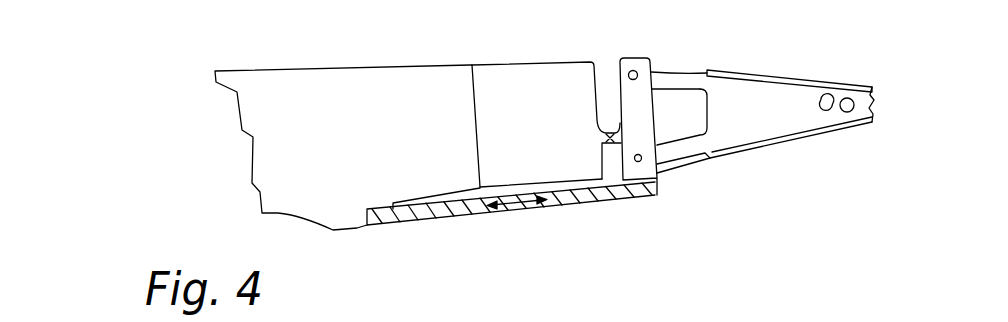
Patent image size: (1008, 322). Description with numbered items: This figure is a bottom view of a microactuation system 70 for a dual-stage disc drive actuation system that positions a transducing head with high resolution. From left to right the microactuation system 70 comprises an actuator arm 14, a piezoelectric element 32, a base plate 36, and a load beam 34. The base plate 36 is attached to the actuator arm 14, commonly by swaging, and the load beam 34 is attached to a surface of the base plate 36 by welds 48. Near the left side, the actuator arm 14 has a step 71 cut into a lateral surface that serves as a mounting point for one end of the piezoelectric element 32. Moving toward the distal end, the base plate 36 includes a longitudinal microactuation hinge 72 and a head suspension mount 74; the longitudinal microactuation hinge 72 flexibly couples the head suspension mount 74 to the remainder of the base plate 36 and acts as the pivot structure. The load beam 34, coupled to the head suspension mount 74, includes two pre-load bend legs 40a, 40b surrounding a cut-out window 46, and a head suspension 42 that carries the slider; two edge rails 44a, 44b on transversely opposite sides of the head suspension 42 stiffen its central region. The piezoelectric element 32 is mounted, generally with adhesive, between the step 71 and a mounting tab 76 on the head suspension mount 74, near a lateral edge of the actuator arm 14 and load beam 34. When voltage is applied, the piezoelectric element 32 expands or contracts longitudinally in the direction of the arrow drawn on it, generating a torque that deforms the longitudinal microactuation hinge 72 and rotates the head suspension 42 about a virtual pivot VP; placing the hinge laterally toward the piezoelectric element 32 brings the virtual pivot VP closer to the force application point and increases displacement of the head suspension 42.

The actuator arm 14 is at (277, 165).
The piezoelectric element 32 is at (460, 207).
The load beam 34 is at (737, 44).
The base plate 36 is at (515, 80).
The pre-load bend leg 40a is at (680, 82).
The pre-load bend leg 40b is at (696, 145).
The head suspension 42 is at (783, 95).
The edge rail 44a is at (835, 82).
The edge rail 44b is at (840, 128).
The cut-out window 46 is at (695, 113).
The welds 48 is at (634, 70).
The microactuation system 70 is at (92, 141).
The step 71 is at (381, 193).
The longitudinal microactuation hinge 72 is at (625, 147).
The head suspension mount 74 is at (640, 118).
The mounting tab 76 is at (656, 178).
The virtual pivot VP is at (604, 140).